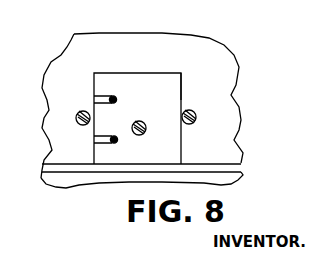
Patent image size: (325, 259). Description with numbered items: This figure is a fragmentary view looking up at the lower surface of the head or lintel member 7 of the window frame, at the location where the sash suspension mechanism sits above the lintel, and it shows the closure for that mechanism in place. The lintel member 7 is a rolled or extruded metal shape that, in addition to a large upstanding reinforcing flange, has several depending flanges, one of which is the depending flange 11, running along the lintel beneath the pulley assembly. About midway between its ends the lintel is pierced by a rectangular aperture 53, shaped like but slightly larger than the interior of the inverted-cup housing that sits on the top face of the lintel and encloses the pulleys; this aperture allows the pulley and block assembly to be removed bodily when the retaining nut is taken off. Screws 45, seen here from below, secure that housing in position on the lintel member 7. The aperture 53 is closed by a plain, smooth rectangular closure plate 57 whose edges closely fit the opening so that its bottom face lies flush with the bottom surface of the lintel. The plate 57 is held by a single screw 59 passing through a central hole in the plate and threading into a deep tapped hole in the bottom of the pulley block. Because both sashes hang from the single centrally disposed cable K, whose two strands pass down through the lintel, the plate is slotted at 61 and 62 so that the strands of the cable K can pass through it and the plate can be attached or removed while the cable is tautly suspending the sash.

The head or lintel member 7 is at (235, 133).
The depending flange 11 is at (242, 164).
The screws 45 is at (78, 127).
The aperture 53 is at (127, 73).
The closure plate 57 is at (170, 80).
The screw 59 is at (147, 130).
The slot 61 is at (105, 96).
The slot 62 is at (107, 143).
The cable K is at (118, 143).